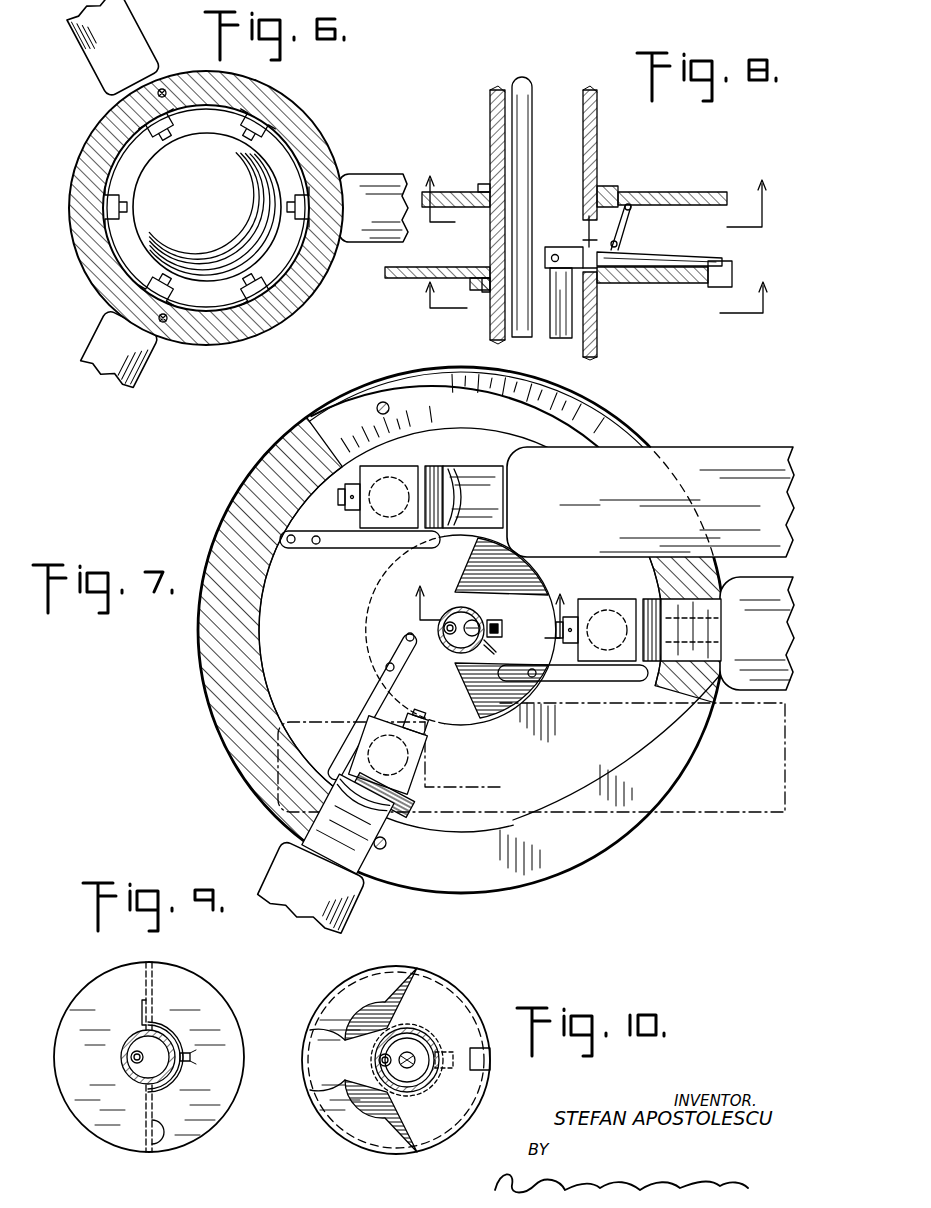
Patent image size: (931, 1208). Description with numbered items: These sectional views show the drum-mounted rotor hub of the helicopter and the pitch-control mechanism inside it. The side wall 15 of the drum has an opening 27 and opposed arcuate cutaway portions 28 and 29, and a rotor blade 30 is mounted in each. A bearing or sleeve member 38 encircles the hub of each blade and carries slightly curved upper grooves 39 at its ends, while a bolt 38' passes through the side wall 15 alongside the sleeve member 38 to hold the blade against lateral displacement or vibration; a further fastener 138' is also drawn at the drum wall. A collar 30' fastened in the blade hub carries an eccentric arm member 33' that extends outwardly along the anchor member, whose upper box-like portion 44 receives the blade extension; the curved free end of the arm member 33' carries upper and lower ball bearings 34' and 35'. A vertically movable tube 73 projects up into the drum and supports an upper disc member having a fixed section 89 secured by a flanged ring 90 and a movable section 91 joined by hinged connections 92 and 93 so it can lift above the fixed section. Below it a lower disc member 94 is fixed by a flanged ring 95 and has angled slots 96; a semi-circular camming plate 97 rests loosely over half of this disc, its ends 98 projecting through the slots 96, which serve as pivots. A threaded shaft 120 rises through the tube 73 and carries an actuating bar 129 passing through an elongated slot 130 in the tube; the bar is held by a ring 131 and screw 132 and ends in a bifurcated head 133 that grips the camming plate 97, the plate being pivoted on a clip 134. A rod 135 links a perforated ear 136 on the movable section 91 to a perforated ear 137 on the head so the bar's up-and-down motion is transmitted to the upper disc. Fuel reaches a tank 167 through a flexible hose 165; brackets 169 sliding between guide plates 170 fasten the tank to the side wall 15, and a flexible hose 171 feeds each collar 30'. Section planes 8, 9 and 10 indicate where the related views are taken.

In FIG. 7, the section line 8— 8 is at (489, 603).
In FIG. 8, the section line 9— 9 is at (595, 189).
In FIG. 8, the section line 10— 10 is at (599, 294).
In FIG. 7, the side wall 15 is at (210, 664).
In FIG. 7, the opening 27 is at (700, 690).
In FIG. 7, the cutaway portion 28 is at (412, 868).
In FIG. 7, the cutaway portion 29 is at (350, 398).
In FIG. 6, the rotor blade 30 is at (237, 195).
In FIG. 7, the rotor blade 30 is at (496, 652).
In FIG. 7, the collar 30' is at (506, 626).
In FIG. 7, the arm member 33' is at (464, 656).
In FIG. 7, the upper ball bearing 34' is at (416, 606).
In FIG. 7, the lower ball bearing 35' is at (350, 588).
In FIG. 7, the bearing or sleeve member 38 is at (498, 654).
In FIG. 7, the bolt 38' is at (378, 635).
In FIG. 7, the upper grooves 39 is at (452, 497).
In FIG. 7, the upper box-like portion 44 is at (398, 466).
In FIG. 8, the tube 73 is at (597, 130).
In FIG. 7, the tube 73 is at (478, 612).
In FIG. 9, the tube 73 is at (126, 1070).
In FIG. 10, the tube 73 is at (426, 1040).
In FIG. 8, the fixed section 89 is at (456, 192).
In FIG. 9, the fixed section 89 is at (90, 1000).
In FIG. 8, the flanged ring 90 is at (606, 190).
In FIG. 8, the movable section 91 is at (705, 192).
In FIG. 9, the movable section 91 is at (208, 996).
In FIG. 9, the hinged connection 92 is at (156, 990).
In FIG. 9, the hinged connection 93 is at (170, 1150).
In FIG. 8, the lower disc member 94 is at (462, 266).
In FIG. 7, the lower disc member 94 is at (368, 602).
In FIG. 10, the lower disc member 94 is at (436, 992).
In FIG. 8, the flanged ring 95 is at (482, 288).
In FIG. 10, the flanged ring 95 is at (430, 1070).
In FIG. 7, the slots 96 is at (470, 553).
In FIG. 10, the slots 96 is at (395, 1002).
In FIG. 8, the camming plate 97 is at (708, 266).
In FIG. 7, the camming plate 97 is at (520, 690).
In FIG. 10, the camming plate 97 is at (482, 1010).
In FIG. 10, the ends of the camming plate 98 is at (322, 1016).
In FIG. 8, the shaft 120 is at (560, 338).
In FIG. 10, the shaft 120 is at (410, 1086).
In FIG. 8, the actuating bar 129 is at (556, 253).
In FIG. 8, the slot 130 is at (590, 215).
In FIG. 8, the ring 131 is at (548, 246).
In FIG. 7, the ring 131 is at (462, 642).
In FIG. 10, the ring 131 is at (410, 1050).
In FIG. 8, the screw 132 is at (572, 310).
In FIG. 8, the bifurcated head 133 is at (640, 270).
In FIG. 7, the bifurcated head 133 is at (503, 624).
In FIG. 8, the clip 134 is at (733, 272).
In FIG. 10, the clip 134 is at (490, 1064).
In FIG. 8, the rod 135 is at (634, 224).
In FIG. 7, the rod 135 is at (496, 648).
In FIG. 9, the rod 135 is at (180, 1080).
In FIG. 8, the perforated ear 136 is at (632, 204).
In FIG. 8, the perforated ear 137 is at (620, 245).
In FIG. 6, the screw 138' is at (180, 221).
In FIG. 8, the flexible pipe or hose 165 is at (530, 80).
In FIG. 7, the flexible pipe or hose 165 is at (443, 626).
In FIG. 9, the flexible pipe or hose 165 is at (134, 1050).
In FIG. 10, the flexible pipe or hose 165 is at (378, 1060).
In FIG. 6, the tank 167 is at (207, 207).
In FIG. 6, the bracket 169 is at (262, 137).
In FIG. 6, the guide plates 170 is at (118, 188).
In FIG. 6, the flexible hose 171 is at (155, 148).